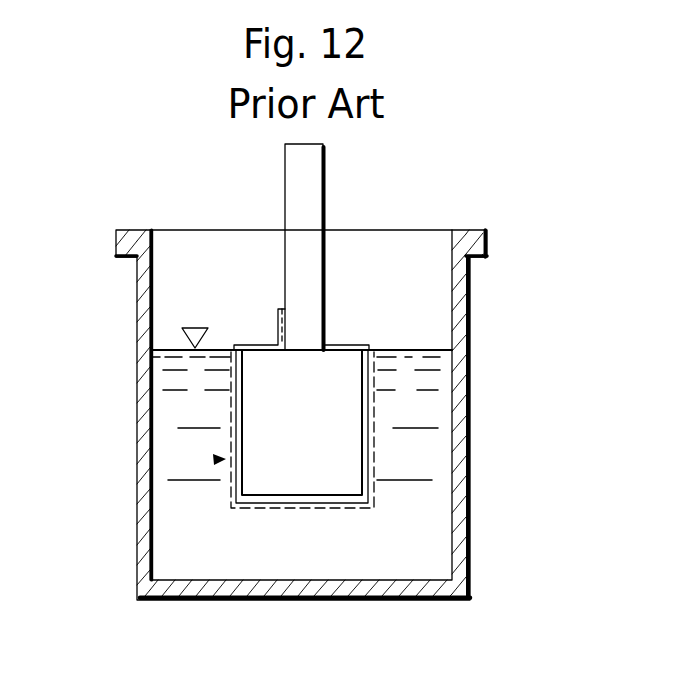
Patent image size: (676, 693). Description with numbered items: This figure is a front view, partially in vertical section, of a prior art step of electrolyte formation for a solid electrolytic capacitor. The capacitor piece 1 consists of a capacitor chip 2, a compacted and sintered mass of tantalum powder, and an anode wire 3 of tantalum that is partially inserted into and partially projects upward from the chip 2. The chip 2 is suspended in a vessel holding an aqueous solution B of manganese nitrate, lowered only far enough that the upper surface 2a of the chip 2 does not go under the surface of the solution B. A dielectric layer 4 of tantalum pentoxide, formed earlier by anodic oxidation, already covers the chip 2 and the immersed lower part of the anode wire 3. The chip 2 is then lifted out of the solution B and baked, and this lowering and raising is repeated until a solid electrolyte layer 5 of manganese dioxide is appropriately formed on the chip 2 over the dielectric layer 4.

The capacitor piece 1 is at (222, 460).
The capacitor chip 2 is at (302, 473).
The upper surface of the chip 2a is at (338, 350).
The anode wire 3 is at (285, 195).
The dielectric layer 4 is at (368, 398).
The solid electrolyte layer 5 is at (368, 487).
The aqueous solution of manganese nitrate B is at (183, 406).